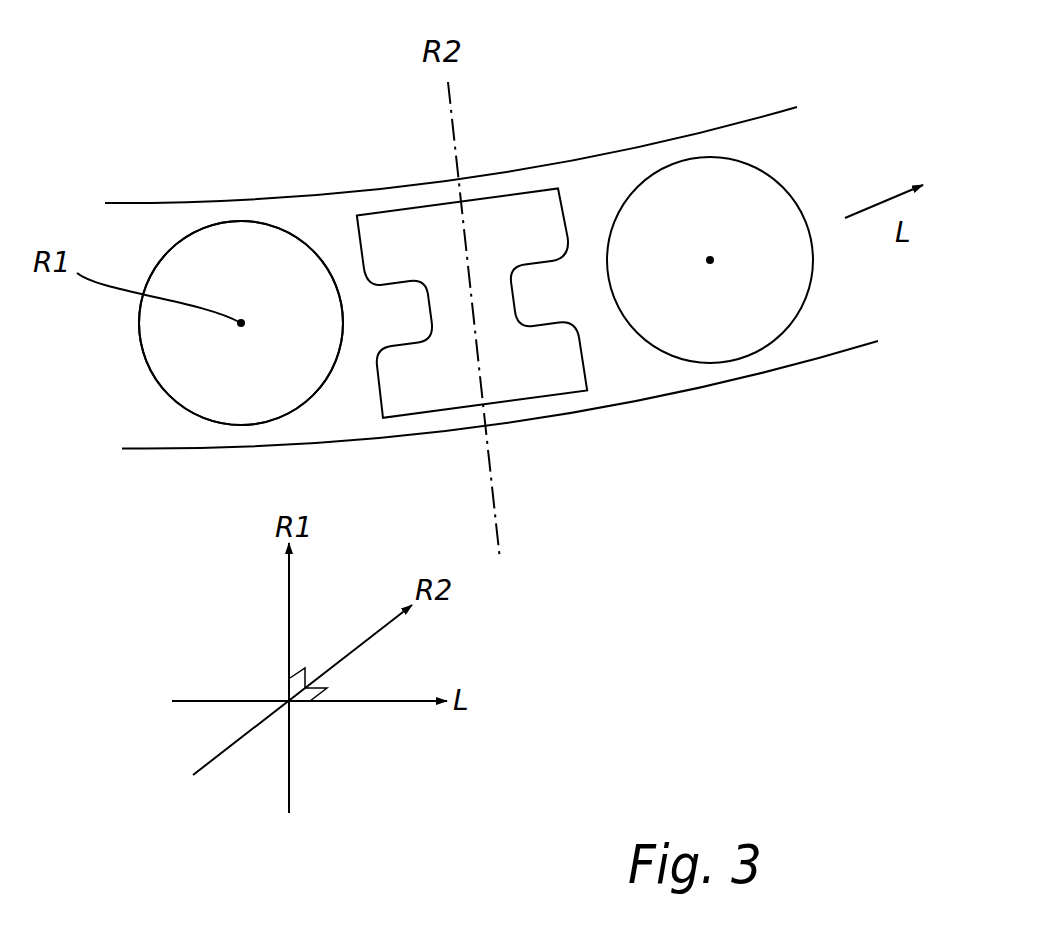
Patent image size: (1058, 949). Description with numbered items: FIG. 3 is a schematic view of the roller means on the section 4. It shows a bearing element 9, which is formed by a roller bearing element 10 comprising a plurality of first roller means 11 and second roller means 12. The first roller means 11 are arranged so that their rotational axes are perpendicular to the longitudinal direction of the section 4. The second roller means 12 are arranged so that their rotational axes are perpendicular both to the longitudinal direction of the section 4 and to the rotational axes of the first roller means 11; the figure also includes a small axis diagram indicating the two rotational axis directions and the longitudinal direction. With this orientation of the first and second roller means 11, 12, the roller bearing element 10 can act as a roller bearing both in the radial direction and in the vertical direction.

The section 4 is at (228, 453).
The bearing element 9 is at (148, 110).
The roller bearing element 10 is at (327, 213).
The first roller means 11 is at (162, 368).
The second roller means 12 is at (507, 215).